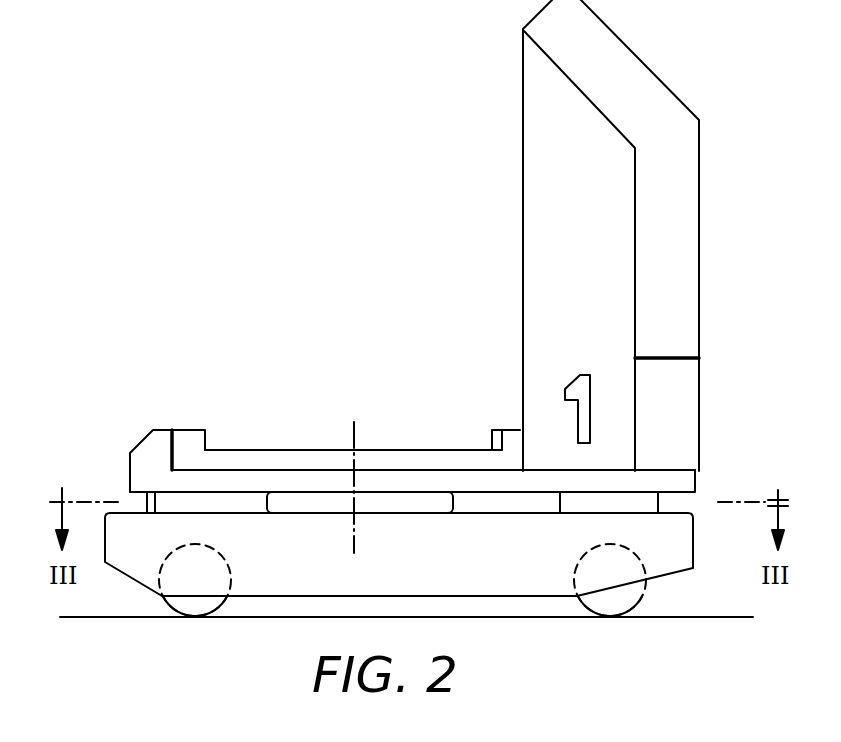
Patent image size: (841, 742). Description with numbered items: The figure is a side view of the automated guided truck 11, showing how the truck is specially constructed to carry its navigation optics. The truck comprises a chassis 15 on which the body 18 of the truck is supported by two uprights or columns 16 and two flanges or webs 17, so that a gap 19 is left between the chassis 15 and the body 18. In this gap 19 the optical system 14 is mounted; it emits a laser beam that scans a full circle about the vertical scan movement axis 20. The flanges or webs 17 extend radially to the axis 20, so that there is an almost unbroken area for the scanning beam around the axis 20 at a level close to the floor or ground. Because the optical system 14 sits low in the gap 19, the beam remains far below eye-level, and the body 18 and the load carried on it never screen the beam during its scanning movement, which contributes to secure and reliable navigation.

The automated guided truck 11 is at (500, 221).
The optical system 14 is at (418, 502).
The chassis 15 is at (528, 585).
The uprights or columns 16 is at (146, 504).
The flanges or webs 17 is at (652, 504).
The body 18 is at (685, 437).
The gap 19 is at (243, 500).
The vertical scan movement axis 20 is at (357, 436).